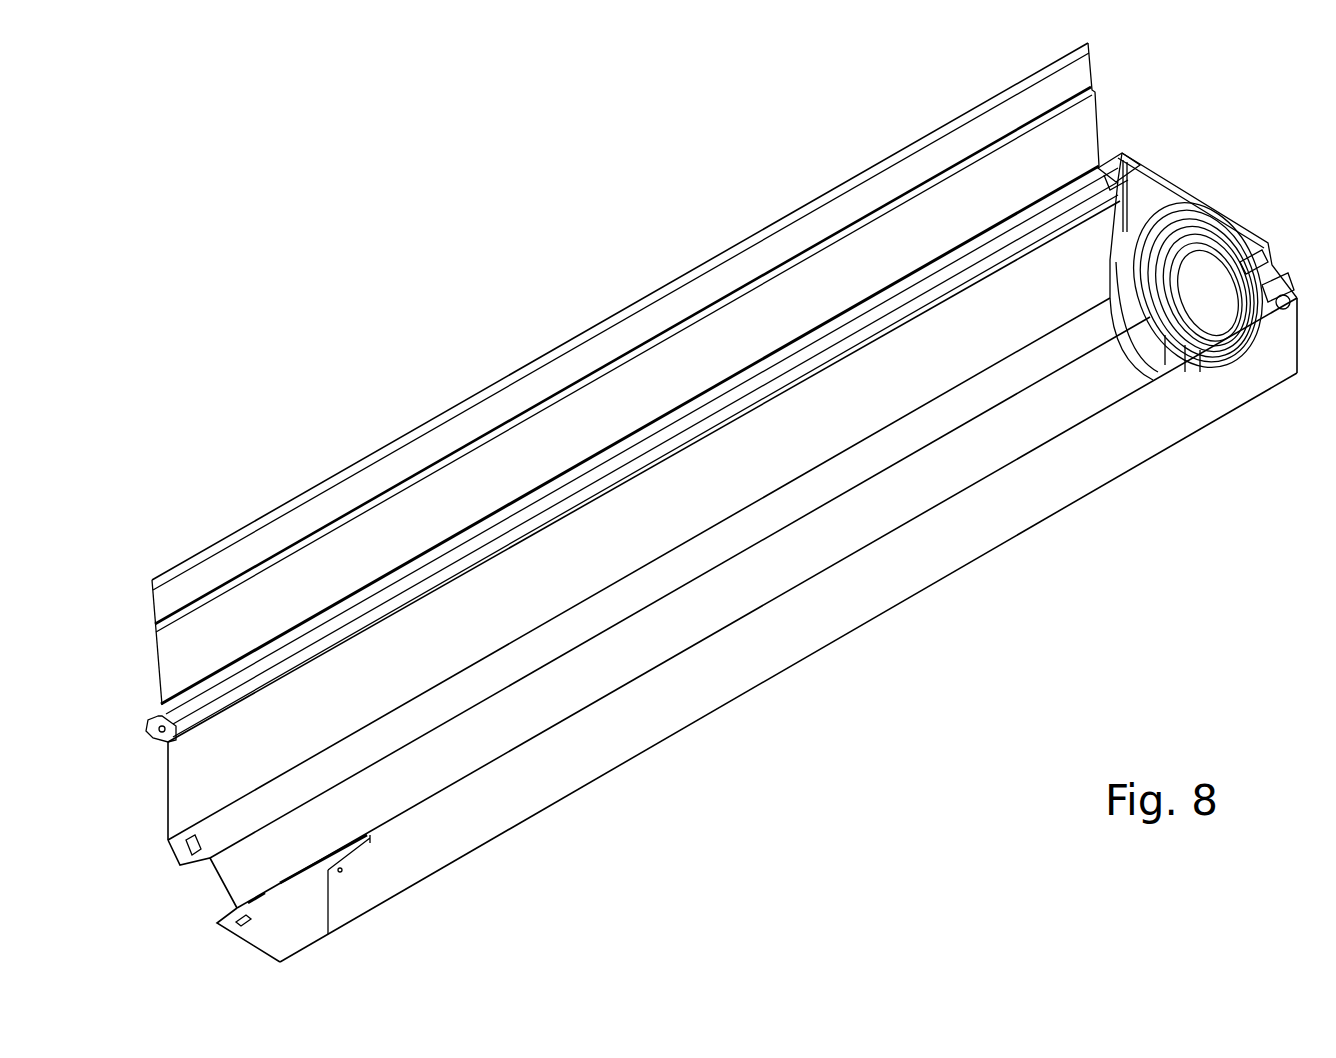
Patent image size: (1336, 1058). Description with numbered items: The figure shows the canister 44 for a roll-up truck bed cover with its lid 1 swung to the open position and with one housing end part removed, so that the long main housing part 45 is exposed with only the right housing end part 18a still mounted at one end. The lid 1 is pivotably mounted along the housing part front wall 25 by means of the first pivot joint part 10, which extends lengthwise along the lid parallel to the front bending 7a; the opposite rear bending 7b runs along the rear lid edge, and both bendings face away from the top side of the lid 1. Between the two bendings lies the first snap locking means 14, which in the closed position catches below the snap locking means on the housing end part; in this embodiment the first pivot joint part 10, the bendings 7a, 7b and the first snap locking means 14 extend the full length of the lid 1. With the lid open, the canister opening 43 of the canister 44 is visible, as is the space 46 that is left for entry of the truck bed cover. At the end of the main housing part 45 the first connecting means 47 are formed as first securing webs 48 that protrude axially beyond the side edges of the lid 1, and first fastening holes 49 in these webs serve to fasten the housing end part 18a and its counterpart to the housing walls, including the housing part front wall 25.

The lid 1 is at (701, 505).
The front bending 7a is at (175, 742).
The rear bending 7b is at (390, 450).
The first pivot joint part 10 is at (585, 473).
The first snap locking means 14 is at (258, 560).
The right housing end part 18a is at (1253, 224).
The housing part front wall 25 is at (1122, 153).
The canister opening 43 is at (950, 400).
The canister 44 is at (910, 630).
The main housing part 45 is at (807, 620).
The space 46 is at (475, 715).
The first connecting means 47 is at (178, 765).
The first securing webs 48 is at (175, 845).
The first fastening holes 49 is at (185, 855).